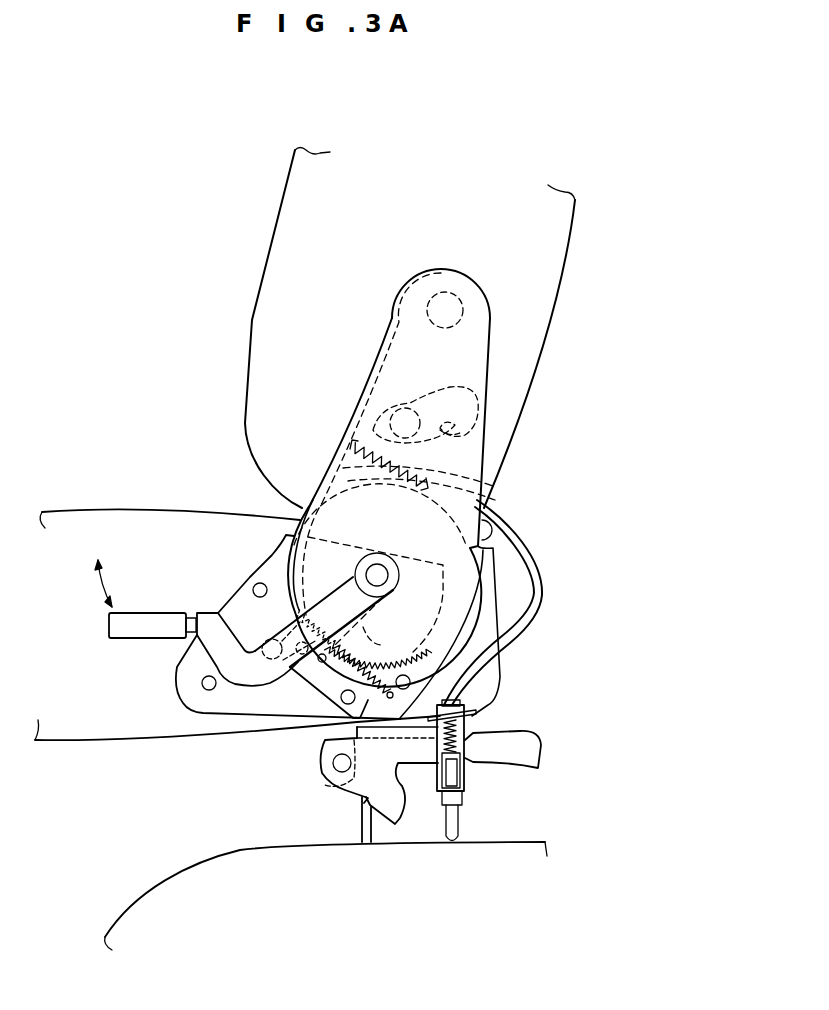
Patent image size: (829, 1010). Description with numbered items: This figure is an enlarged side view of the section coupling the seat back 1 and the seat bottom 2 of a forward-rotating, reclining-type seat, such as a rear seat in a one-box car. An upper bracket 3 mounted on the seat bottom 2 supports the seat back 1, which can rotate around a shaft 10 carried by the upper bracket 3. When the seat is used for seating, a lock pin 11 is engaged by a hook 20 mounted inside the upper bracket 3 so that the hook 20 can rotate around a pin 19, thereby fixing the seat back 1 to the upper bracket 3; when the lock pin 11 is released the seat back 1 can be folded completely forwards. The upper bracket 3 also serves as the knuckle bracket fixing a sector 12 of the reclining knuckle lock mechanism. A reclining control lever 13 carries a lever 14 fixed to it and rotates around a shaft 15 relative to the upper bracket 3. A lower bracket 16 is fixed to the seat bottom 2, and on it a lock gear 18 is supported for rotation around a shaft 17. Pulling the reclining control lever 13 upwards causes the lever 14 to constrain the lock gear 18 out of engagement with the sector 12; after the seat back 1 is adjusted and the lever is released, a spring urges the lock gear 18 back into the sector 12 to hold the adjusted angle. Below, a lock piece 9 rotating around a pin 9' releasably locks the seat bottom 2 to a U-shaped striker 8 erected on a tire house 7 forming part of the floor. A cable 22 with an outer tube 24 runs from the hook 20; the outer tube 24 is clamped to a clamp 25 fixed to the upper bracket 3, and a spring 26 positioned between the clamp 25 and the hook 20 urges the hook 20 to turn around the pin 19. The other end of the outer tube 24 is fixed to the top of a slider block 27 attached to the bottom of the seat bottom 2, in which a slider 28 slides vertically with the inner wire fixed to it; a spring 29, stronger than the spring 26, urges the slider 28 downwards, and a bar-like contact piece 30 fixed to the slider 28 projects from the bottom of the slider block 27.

The seat back 1 is at (538, 375).
The seat bottom 2 is at (152, 509).
The upper bracket 3 is at (486, 450).
The tire house 7 is at (212, 863).
The striker 8 is at (363, 822).
The lock piece 9 is at (402, 801).
The pin 9' is at (363, 769).
The shaft 10 is at (457, 307).
The lock pin 11 is at (463, 432).
The sector 12 is at (278, 562).
The reclining control lever 13 is at (210, 612).
The lever 14 is at (377, 645).
The shaft 15 is at (378, 572).
The lower bracket 16 is at (243, 698).
The shaft 17 is at (337, 696).
The lock gear 18 is at (315, 672).
The pin 19 is at (375, 418).
The hook 20 is at (427, 393).
The cable 22 is at (525, 628).
The outer tube 24 is at (543, 567).
The clamp 25 is at (487, 487).
The spring 26 is at (335, 458).
The slider block 27 is at (470, 786).
The slider 28 is at (464, 761).
The spring 29 is at (492, 718).
The contact piece 30 is at (457, 830).